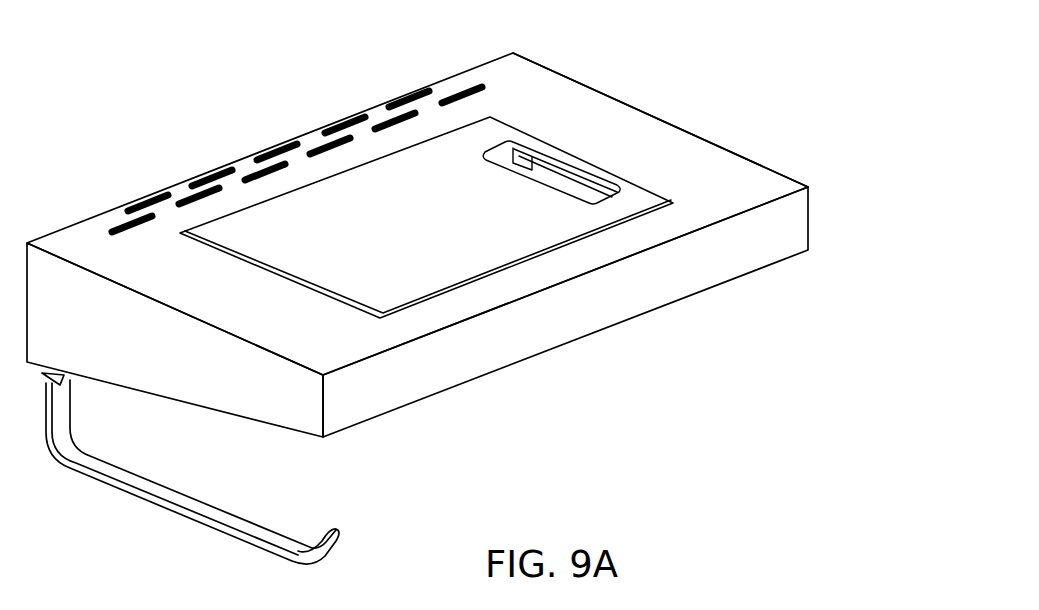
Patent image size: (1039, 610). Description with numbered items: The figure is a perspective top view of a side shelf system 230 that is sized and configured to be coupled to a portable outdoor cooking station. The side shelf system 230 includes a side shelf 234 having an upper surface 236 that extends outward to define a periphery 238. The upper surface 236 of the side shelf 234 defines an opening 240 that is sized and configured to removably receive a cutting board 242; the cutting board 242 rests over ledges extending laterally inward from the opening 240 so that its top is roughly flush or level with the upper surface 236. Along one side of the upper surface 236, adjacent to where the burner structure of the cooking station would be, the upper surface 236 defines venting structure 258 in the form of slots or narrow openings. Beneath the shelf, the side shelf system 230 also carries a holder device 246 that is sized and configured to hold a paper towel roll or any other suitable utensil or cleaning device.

The side shelf system 230 is at (485, 310).
The side shelf 234 is at (448, 230).
The upper surface 236 is at (678, 152).
The periphery 238 is at (547, 69).
The opening 240 is at (607, 167).
The cutting board 242 is at (428, 223).
The holder device 246 is at (171, 532).
The venting structure 258 is at (120, 226).